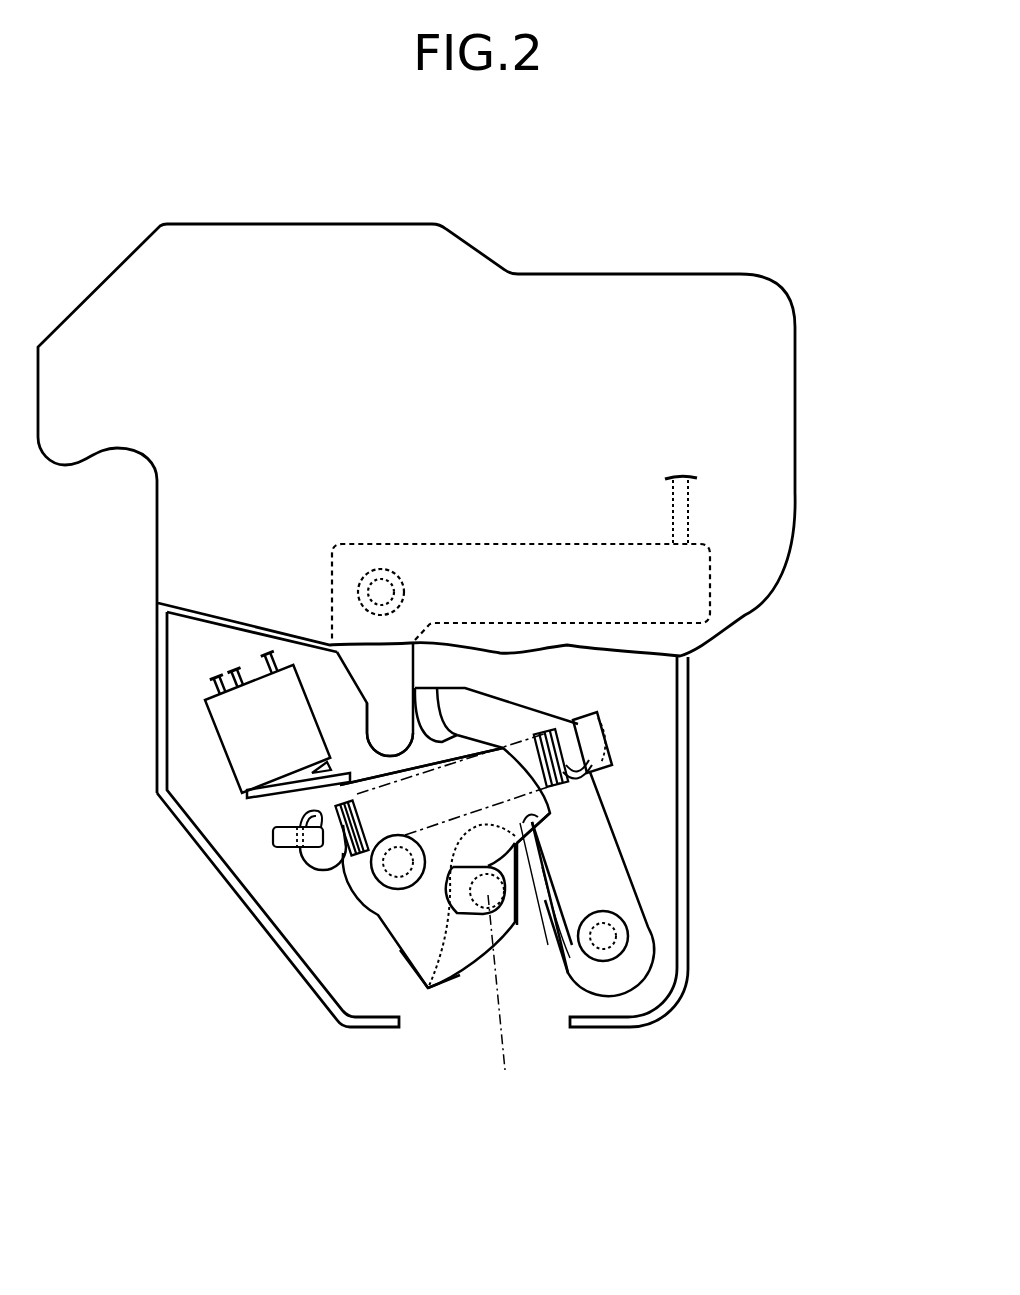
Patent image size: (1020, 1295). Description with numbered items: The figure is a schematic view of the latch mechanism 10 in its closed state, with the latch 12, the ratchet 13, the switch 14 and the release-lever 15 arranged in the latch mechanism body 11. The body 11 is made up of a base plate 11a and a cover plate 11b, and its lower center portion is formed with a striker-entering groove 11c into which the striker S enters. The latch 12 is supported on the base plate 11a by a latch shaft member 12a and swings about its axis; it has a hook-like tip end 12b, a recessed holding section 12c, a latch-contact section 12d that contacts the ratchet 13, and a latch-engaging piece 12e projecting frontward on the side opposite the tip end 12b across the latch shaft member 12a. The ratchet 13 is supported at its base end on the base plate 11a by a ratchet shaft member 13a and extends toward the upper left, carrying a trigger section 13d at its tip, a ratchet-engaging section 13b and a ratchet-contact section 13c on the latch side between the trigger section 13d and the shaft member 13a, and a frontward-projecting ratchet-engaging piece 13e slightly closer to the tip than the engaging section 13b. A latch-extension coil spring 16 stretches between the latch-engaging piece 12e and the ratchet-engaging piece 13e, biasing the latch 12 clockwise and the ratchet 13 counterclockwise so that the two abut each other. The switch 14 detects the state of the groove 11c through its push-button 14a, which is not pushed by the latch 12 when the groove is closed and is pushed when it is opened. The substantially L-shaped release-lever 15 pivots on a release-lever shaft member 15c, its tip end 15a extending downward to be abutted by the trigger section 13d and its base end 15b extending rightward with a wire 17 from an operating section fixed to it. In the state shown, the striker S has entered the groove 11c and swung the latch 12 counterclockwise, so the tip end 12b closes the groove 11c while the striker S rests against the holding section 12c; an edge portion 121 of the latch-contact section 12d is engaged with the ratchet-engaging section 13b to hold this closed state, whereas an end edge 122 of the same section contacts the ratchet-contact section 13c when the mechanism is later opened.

The latch mechanism 10 is at (822, 573).
The latch mechanism body 11 is at (690, 788).
The base plate 11a is at (650, 732).
The cover plate 11b is at (735, 597).
The striker-entering groove 11c is at (473, 993).
The latch 12 is at (415, 930).
The latch shaft member 12a is at (395, 866).
The tip end 12b is at (490, 915).
The holding section 12c is at (405, 948).
The latch-contact section 12d is at (562, 852).
The latch-engaging piece 12e is at (277, 822).
The edge portion 121 is at (548, 870).
The end edge 122 is at (545, 806).
The ratchet 13 is at (623, 890).
The ratchet shaft member 13a is at (605, 937).
The ratchet-engaging section 13b is at (548, 823).
The ratchet-contact section 13c is at (577, 910).
The trigger section 13d is at (473, 703).
The ratchet-engaging piece 13e is at (612, 763).
The switch 14 is at (228, 718).
The push-button 14a is at (307, 770).
The release-lever 15 is at (367, 660).
The tip end 15a is at (390, 727).
The base end 15b is at (682, 580).
The release-lever shaft member 15c is at (380, 592).
The latch-extension coil spring 16 is at (556, 788).
The wire 17 is at (680, 516).
The striker S is at (491, 986).